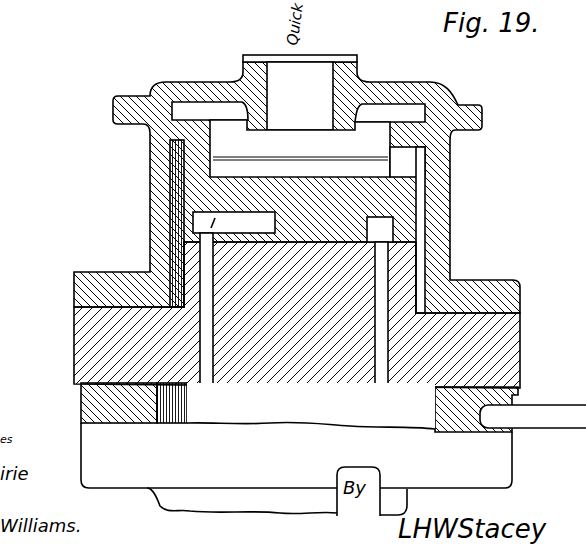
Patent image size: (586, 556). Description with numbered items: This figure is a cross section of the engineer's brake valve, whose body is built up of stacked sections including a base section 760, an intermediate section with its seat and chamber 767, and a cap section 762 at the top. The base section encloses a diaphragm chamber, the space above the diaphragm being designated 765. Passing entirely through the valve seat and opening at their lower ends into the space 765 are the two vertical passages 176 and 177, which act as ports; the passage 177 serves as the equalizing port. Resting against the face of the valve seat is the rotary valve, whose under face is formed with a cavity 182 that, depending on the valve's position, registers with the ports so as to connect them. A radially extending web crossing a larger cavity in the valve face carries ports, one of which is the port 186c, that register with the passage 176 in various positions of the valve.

The housing cap 762 is at (450, 172).
The cylinder block 767 is at (520, 332).
The lower block 760 is at (81, 404).
The chamber 765 is at (311, 406).
The vertical passage 176 is at (207, 258).
The vertical passage 177 is at (388, 253).
The cavity 182 is at (393, 222).
The recess 186c is at (234, 222).